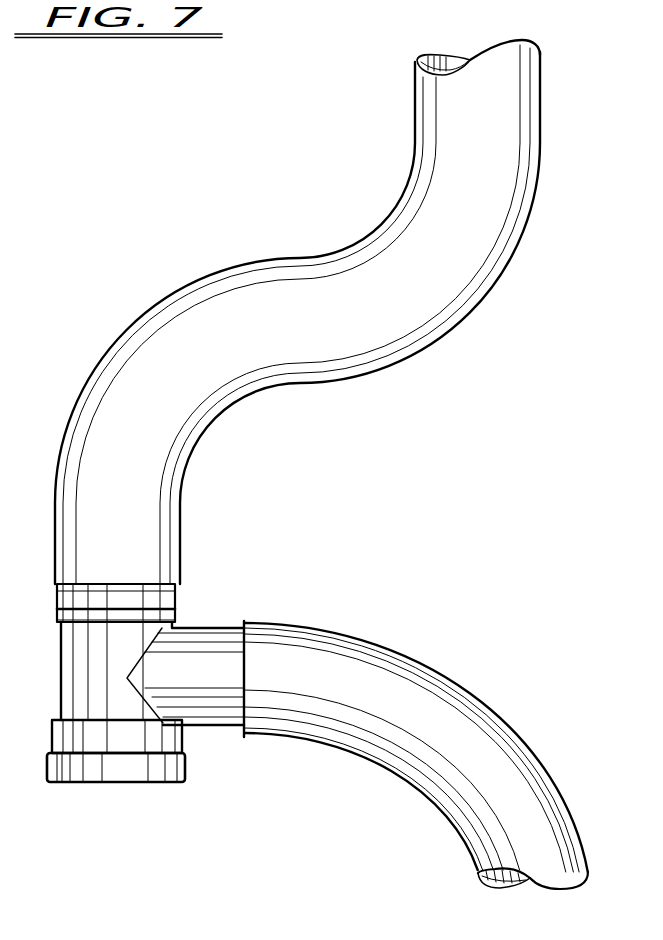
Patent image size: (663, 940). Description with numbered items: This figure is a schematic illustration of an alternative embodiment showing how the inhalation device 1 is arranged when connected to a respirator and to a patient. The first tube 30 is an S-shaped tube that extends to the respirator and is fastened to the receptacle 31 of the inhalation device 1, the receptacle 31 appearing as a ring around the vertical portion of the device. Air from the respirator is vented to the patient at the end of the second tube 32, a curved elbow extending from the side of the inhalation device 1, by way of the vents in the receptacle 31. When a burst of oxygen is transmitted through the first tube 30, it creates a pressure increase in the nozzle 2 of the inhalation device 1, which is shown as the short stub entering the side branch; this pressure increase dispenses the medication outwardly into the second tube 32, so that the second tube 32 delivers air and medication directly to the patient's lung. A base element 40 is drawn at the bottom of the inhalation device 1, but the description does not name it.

The inhalation device 1 is at (212, 733).
The nozzle 2 is at (213, 627).
The first tube 30 is at (428, 313).
The receptacle 31 is at (181, 597).
The second tube 32 is at (437, 670).
The base flange 40 is at (123, 775).